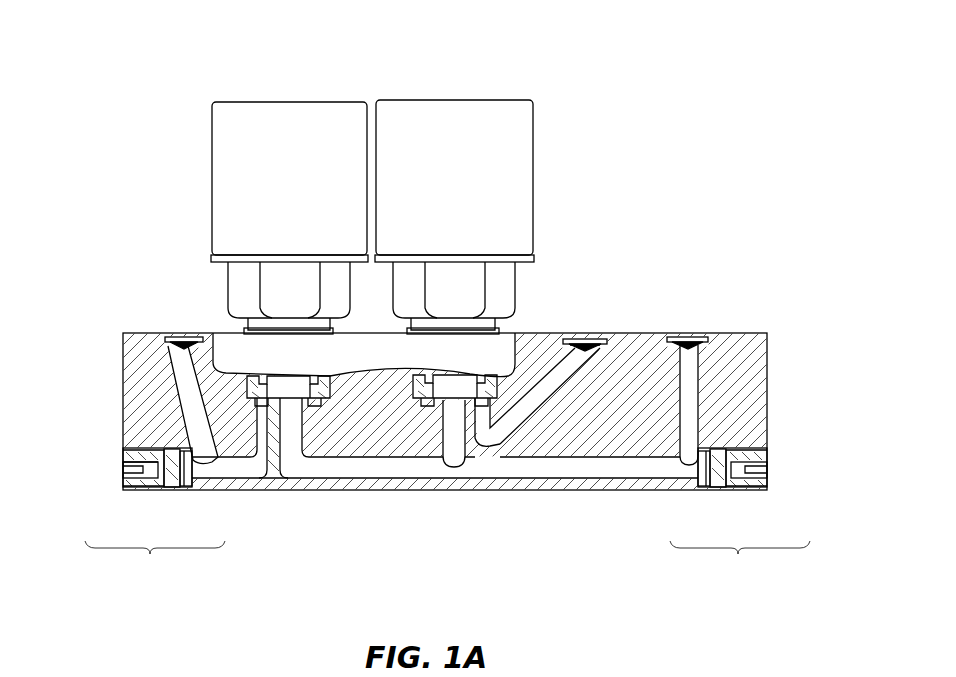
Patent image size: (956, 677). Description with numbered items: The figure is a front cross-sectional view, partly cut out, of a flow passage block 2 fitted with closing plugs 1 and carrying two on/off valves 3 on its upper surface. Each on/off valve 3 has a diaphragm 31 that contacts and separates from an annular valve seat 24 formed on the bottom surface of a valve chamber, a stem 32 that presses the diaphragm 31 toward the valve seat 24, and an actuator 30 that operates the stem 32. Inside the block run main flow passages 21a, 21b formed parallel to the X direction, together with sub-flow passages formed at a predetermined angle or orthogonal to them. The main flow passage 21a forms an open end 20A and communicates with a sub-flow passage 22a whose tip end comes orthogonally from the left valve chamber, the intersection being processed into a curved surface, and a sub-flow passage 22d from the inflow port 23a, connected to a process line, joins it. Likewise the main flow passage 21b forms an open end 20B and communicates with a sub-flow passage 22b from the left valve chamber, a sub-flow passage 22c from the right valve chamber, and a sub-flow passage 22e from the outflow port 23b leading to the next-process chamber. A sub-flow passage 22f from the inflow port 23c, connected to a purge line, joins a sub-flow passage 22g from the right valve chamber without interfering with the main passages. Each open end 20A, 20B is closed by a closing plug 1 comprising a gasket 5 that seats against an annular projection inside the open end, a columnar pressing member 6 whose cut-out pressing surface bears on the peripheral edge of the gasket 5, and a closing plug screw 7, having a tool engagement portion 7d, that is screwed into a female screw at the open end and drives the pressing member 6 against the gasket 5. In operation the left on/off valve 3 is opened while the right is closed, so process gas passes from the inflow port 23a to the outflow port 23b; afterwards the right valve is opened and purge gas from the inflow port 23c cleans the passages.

The closing plug 1 is at (447, 568).
The flow passage block 2 is at (772, 397).
The on/off valve 3 is at (306, 100).
The gasket 5 is at (186, 488).
The pressing member 6 is at (172, 488).
The closing plug screw 7 is at (160, 455).
The connector body slot 7d is at (125, 470).
The open end 20A is at (128, 465).
The open end 20B is at (772, 468).
The main flow passage 21a is at (262, 470).
The main flow passage 21b is at (545, 470).
The sub-flow passage 22a is at (292, 450).
The sub-flow passage 22b is at (305, 445).
The sub-flow passage 22c is at (440, 430).
The sub-flow passage 22d is at (185, 425).
The sub-flow passage 22e is at (712, 348).
The sub-flow passage 22f is at (622, 352).
The sub-flow passage 22g is at (483, 440).
The inflow port 23a is at (182, 336).
The outflow port 23b is at (688, 336).
The inflow port 23c is at (583, 337).
The valve seat 24 is at (168, 344).
The actuator 30 is at (227, 208).
The diaphragm 31 is at (400, 356).
The stem 32 is at (258, 378).
The X direction X is at (45, 252).